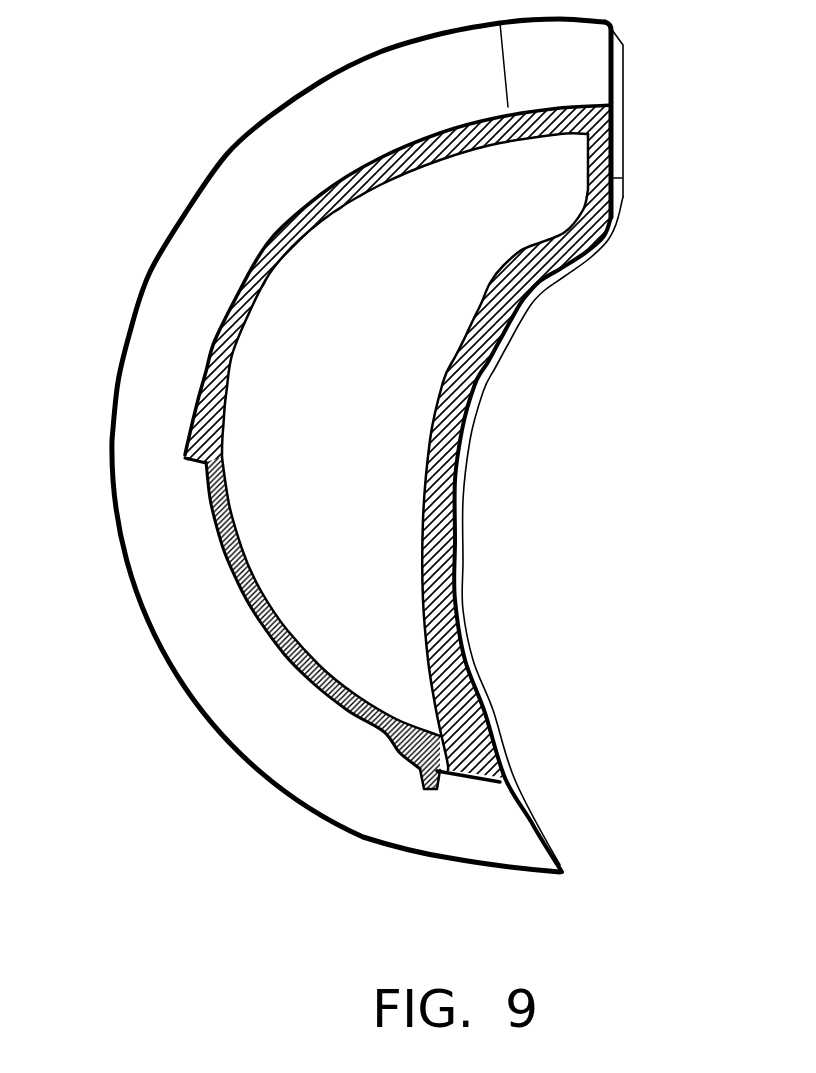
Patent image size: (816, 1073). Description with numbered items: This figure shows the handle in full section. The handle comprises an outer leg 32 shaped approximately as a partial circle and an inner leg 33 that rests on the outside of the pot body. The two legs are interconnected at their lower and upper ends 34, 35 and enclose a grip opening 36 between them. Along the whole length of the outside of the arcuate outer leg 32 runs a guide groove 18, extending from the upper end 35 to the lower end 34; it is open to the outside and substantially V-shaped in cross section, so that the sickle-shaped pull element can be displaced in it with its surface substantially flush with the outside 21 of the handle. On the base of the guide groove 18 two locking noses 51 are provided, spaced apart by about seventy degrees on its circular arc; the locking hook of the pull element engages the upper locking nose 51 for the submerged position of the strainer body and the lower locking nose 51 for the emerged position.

The guide groove 18 is at (326, 445).
The outside of the handle 21 is at (227, 153).
The outer leg 32 is at (267, 617).
The inner leg 33 is at (462, 608).
The lower end 34 is at (481, 800).
The upper end 35 is at (623, 106).
The grip opening 36 is at (360, 444).
The locking nose 51 is at (184, 458).